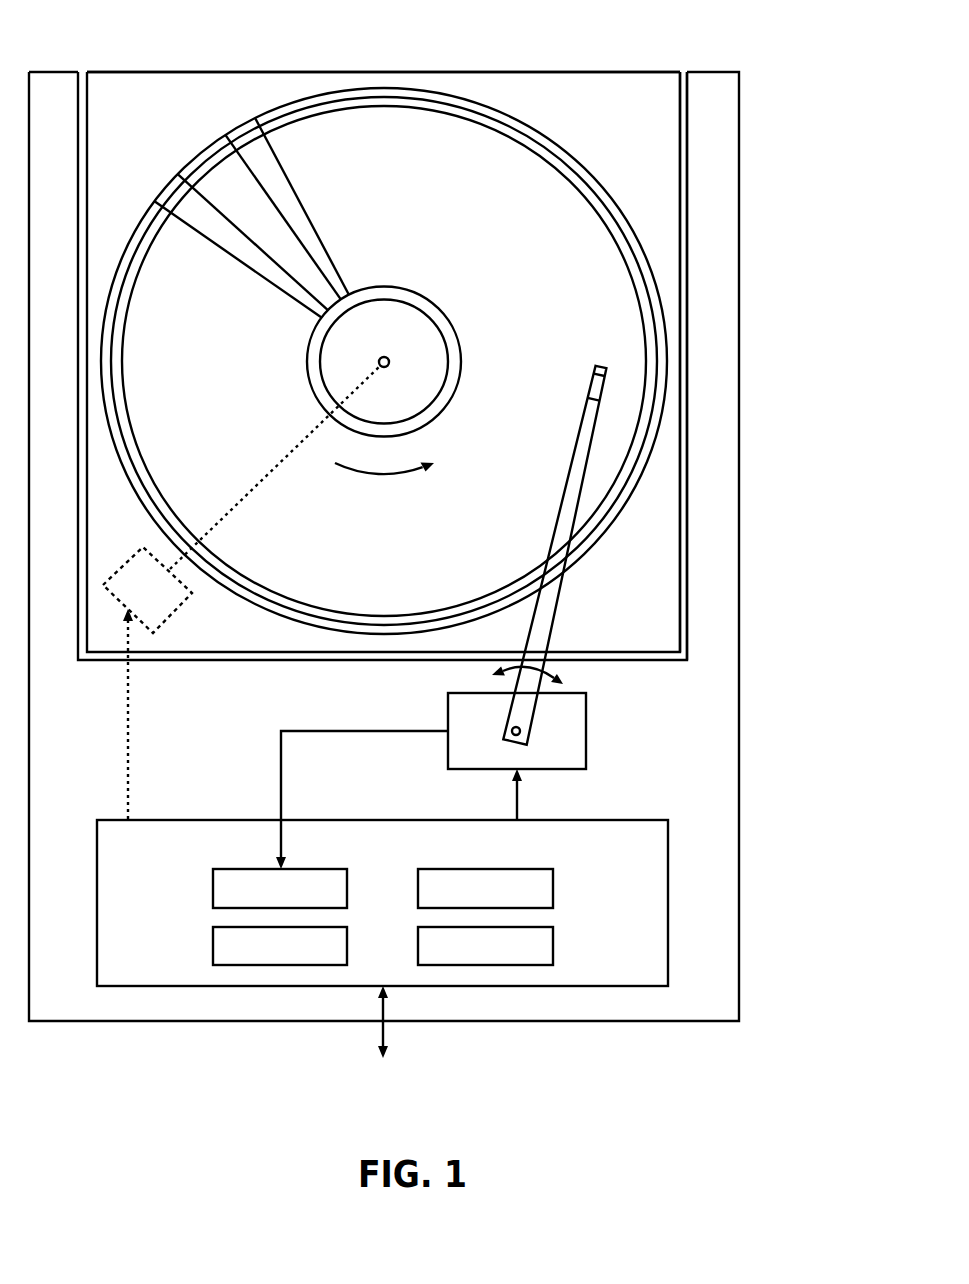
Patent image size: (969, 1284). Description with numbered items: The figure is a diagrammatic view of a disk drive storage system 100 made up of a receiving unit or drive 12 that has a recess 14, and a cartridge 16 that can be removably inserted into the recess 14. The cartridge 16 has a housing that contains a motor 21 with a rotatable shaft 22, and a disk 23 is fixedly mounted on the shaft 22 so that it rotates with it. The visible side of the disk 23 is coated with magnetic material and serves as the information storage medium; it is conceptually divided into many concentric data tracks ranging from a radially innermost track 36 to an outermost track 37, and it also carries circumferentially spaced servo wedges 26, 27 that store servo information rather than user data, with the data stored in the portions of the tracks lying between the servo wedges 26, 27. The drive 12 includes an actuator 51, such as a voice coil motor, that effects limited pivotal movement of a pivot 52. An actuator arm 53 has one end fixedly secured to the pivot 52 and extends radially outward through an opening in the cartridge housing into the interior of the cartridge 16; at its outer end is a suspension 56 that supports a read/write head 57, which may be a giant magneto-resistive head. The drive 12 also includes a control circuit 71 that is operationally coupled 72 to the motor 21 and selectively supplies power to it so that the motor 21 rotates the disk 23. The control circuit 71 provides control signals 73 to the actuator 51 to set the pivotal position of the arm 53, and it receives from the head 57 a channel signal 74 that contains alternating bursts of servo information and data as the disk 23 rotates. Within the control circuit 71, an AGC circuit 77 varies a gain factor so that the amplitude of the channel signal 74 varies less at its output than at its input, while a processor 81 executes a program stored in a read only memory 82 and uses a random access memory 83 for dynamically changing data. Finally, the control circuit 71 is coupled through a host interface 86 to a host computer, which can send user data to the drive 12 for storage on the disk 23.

The disk drive storage system 100 is at (789, 85).
The drive 12 is at (55, 72).
The recess 14 is at (683, 62).
The cartridge 16 is at (512, 72).
The motor 21 is at (241, 499).
The rotatable shaft 22 is at (387, 365).
The disk 23 is at (585, 170).
The servo wedge 26 is at (283, 275).
The servo wedge 27 is at (333, 277).
The innermost track 36 is at (435, 312).
The outermost track 37 is at (320, 613).
The actuator 51 is at (517, 731).
The pivot 52 is at (527, 728).
The actuator arm 53 is at (558, 530).
The suspension 56 is at (596, 393).
The read/write head 57 is at (598, 367).
The control circuit 71 is at (395, 819).
The operational coupling 72 is at (128, 788).
The control signals 73 is at (518, 810).
The channel signal 74 is at (333, 730).
The AGC circuit 77 is at (213, 888).
The processor 81 is at (553, 890).
The read only memory 82 is at (213, 944).
The random access memory 83 is at (553, 947).
The host interface 86 is at (381, 1030).